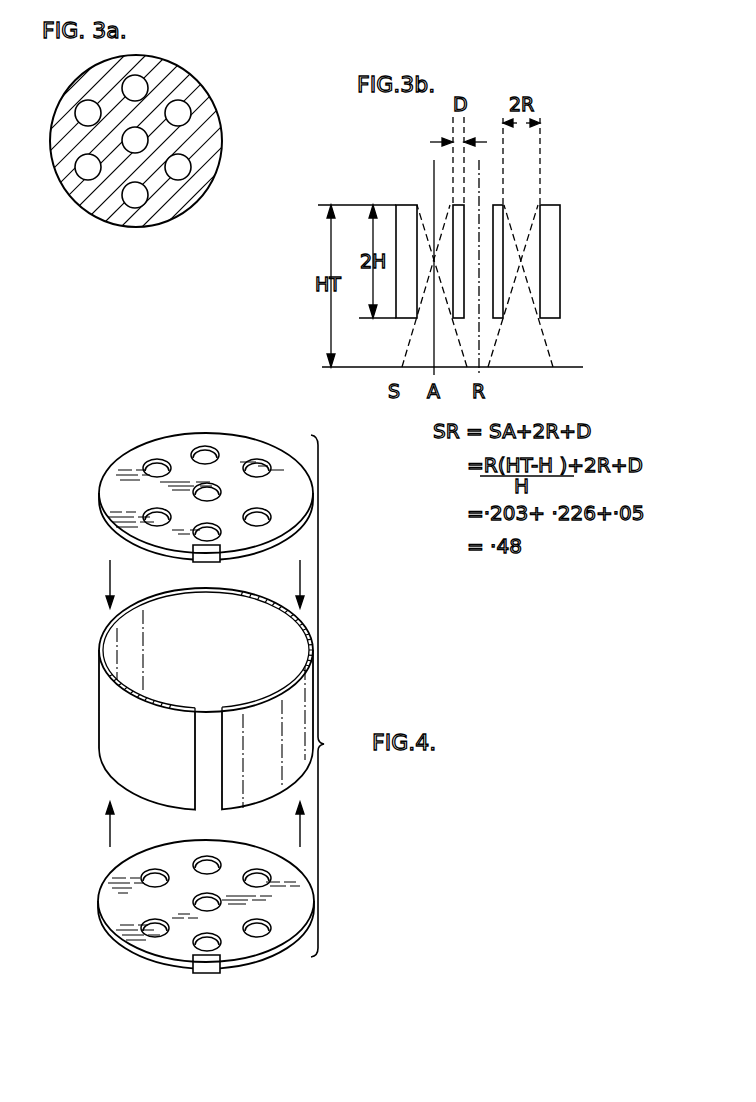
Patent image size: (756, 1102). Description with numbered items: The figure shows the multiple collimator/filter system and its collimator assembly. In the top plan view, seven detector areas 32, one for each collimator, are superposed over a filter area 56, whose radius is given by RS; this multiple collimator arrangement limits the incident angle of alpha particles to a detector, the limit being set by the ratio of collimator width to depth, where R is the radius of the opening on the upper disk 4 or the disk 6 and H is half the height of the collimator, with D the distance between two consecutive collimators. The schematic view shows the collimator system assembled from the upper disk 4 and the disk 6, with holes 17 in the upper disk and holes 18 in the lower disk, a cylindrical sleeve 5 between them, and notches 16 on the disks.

In FIG. 3A, the detector areas 32 is at (137, 93).
In FIG. 3A, the filter area 56 is at (78, 187).
In FIG. 4, the upper disk 4 is at (113, 478).
In FIG. 4, the cylindrical sleeve 5 is at (99, 690).
In FIG. 4, the disk 6 is at (300, 897).
In FIG. 4, the notch 16 is at (207, 572).
In FIG. 4, the holes in top plate 17 is at (253, 466).
In FIG. 4, the holes in bottom plate 18 is at (207, 902).